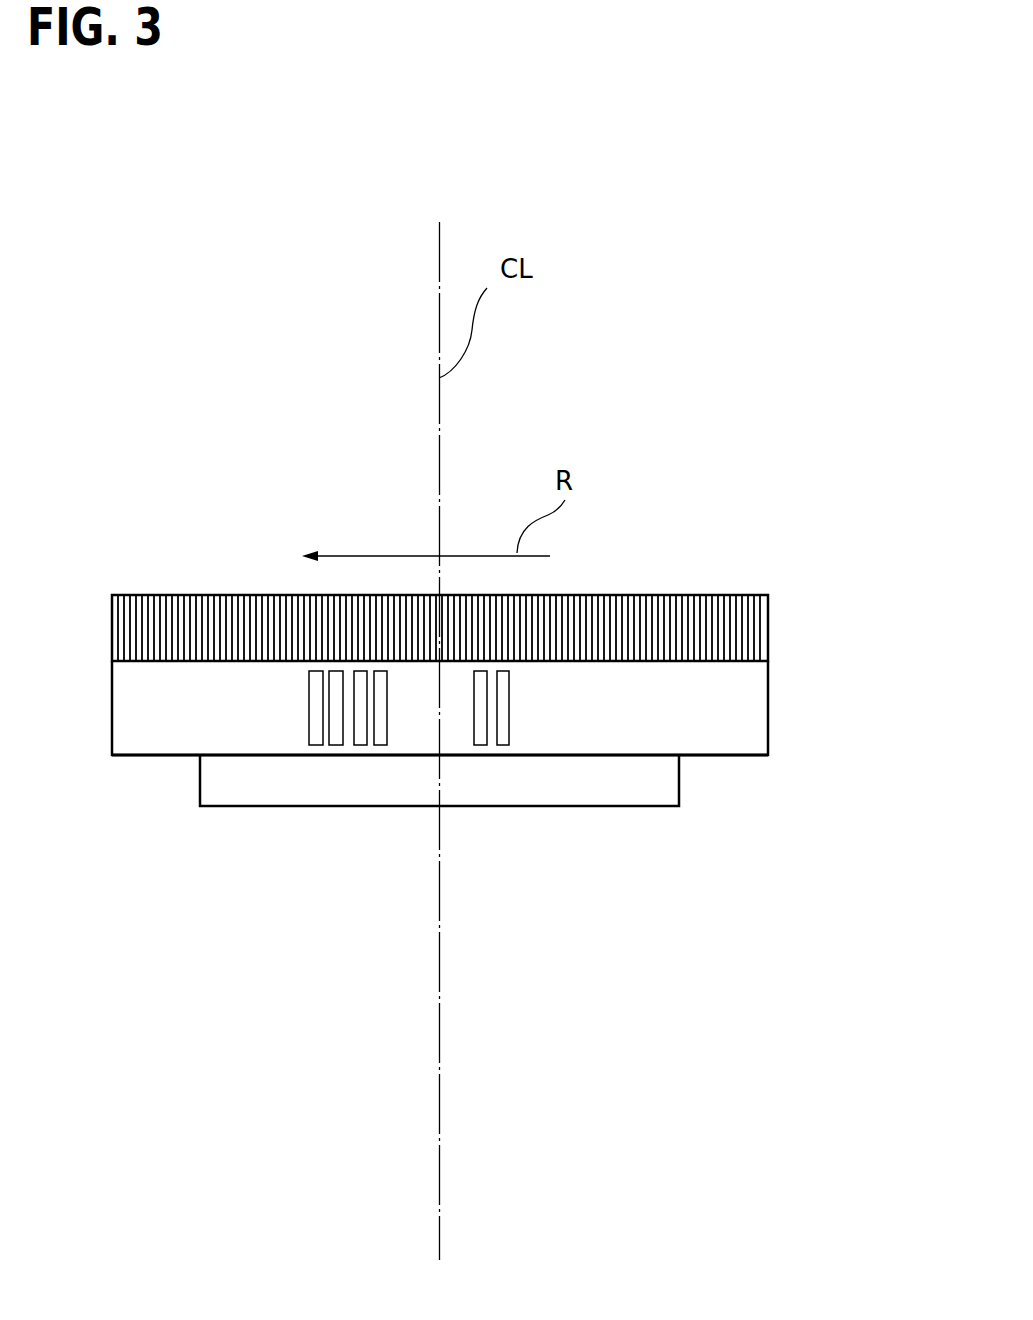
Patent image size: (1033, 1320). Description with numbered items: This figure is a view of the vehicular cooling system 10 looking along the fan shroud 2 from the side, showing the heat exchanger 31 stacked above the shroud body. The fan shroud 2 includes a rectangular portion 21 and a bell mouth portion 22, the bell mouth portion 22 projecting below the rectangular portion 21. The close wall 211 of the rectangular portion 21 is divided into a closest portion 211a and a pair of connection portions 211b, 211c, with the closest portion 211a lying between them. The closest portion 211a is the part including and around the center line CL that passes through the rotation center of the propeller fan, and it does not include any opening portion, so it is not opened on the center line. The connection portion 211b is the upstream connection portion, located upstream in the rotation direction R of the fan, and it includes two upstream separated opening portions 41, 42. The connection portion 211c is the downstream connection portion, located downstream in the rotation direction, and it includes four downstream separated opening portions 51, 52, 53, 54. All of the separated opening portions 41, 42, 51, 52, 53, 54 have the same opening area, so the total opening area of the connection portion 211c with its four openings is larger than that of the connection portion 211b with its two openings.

The vehicular cooling system 10 is at (790, 490).
The heat exchanger 31 is at (692, 594).
The fan shroud 2 is at (782, 692).
The rectangular portion 21 is at (777, 732).
The close wall 211 is at (720, 730).
The closest portion 211a is at (477, 760).
The connection portion 211b is at (768, 760).
The connection portion 211c is at (403, 760).
The bell mouth portion 22 is at (687, 796).
The upstream separated opening portion 41 is at (503, 746).
The upstream separated opening portion 42 is at (481, 746).
The downstream separated opening portion 51 is at (380, 746).
The downstream separated opening portion 52 is at (359, 746).
The downstream separated opening portion 53 is at (337, 746).
The downstream separated opening portion 54 is at (315, 746).